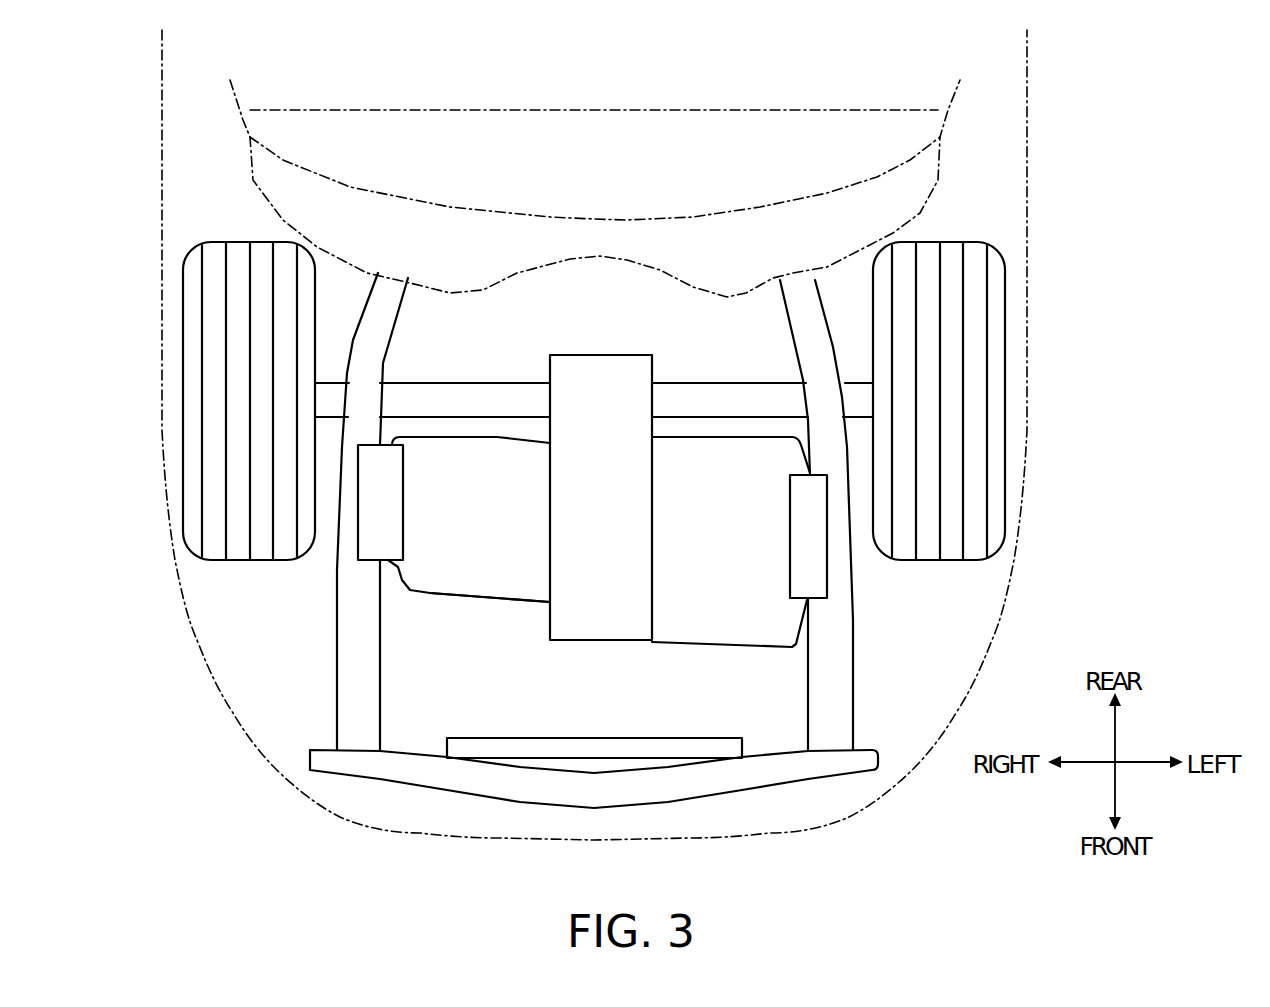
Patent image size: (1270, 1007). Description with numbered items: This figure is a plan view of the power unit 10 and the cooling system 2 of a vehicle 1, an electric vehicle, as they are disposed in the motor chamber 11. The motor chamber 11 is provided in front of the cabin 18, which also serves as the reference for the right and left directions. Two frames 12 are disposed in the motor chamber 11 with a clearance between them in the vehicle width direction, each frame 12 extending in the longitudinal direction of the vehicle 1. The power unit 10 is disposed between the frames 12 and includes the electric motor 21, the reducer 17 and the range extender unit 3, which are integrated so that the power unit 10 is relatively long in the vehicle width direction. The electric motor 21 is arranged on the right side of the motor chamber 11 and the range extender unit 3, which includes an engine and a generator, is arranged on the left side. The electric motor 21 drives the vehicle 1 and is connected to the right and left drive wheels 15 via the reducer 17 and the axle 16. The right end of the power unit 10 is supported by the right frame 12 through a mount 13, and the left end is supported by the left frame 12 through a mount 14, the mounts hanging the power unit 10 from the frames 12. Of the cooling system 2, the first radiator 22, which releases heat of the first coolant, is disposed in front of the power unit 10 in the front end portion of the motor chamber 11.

The vehicle 1 is at (166, 684).
The cooling system 2 is at (517, 653).
The range extender unit 3 is at (665, 648).
The power unit 10 is at (594, 540).
The motor chamber 11 is at (584, 327).
The frames 12 is at (385, 708).
The mount 13 is at (403, 530).
The mount 14 is at (785, 570).
The drive wheels 15 is at (183, 392).
The axle 16 is at (428, 383).
The reducer 17 is at (637, 355).
The cabin 18 is at (584, 67).
The electric motor 21 is at (483, 437).
The first radiator 22 is at (580, 740).